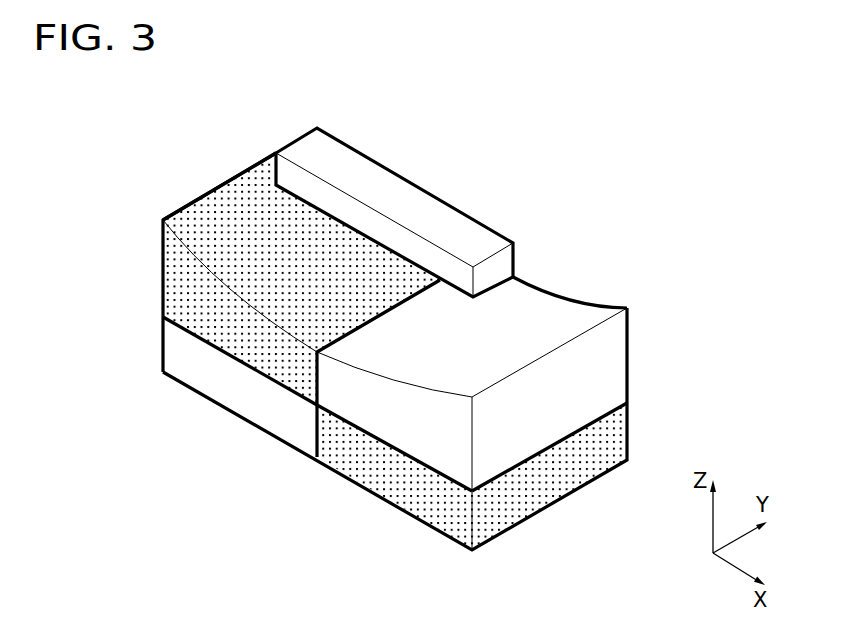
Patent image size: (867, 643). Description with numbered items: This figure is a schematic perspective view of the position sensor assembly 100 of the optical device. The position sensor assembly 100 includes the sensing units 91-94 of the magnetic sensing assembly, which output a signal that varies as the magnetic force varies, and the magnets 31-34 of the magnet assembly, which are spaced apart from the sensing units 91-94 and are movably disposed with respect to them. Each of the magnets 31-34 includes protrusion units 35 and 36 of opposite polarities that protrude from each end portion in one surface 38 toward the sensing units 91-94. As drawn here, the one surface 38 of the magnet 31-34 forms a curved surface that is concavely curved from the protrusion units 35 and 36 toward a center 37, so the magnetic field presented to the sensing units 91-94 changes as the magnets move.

The position sensor assembly 100 is at (704, 135).
The magnets 31-34 is at (143, 189).
The protrusion unit 35 is at (240, 175).
The protrusion unit 36 is at (583, 330).
The center 37 is at (345, 336).
The one surface 38 is at (532, 310).
The sensing units 91-94 is at (490, 240).